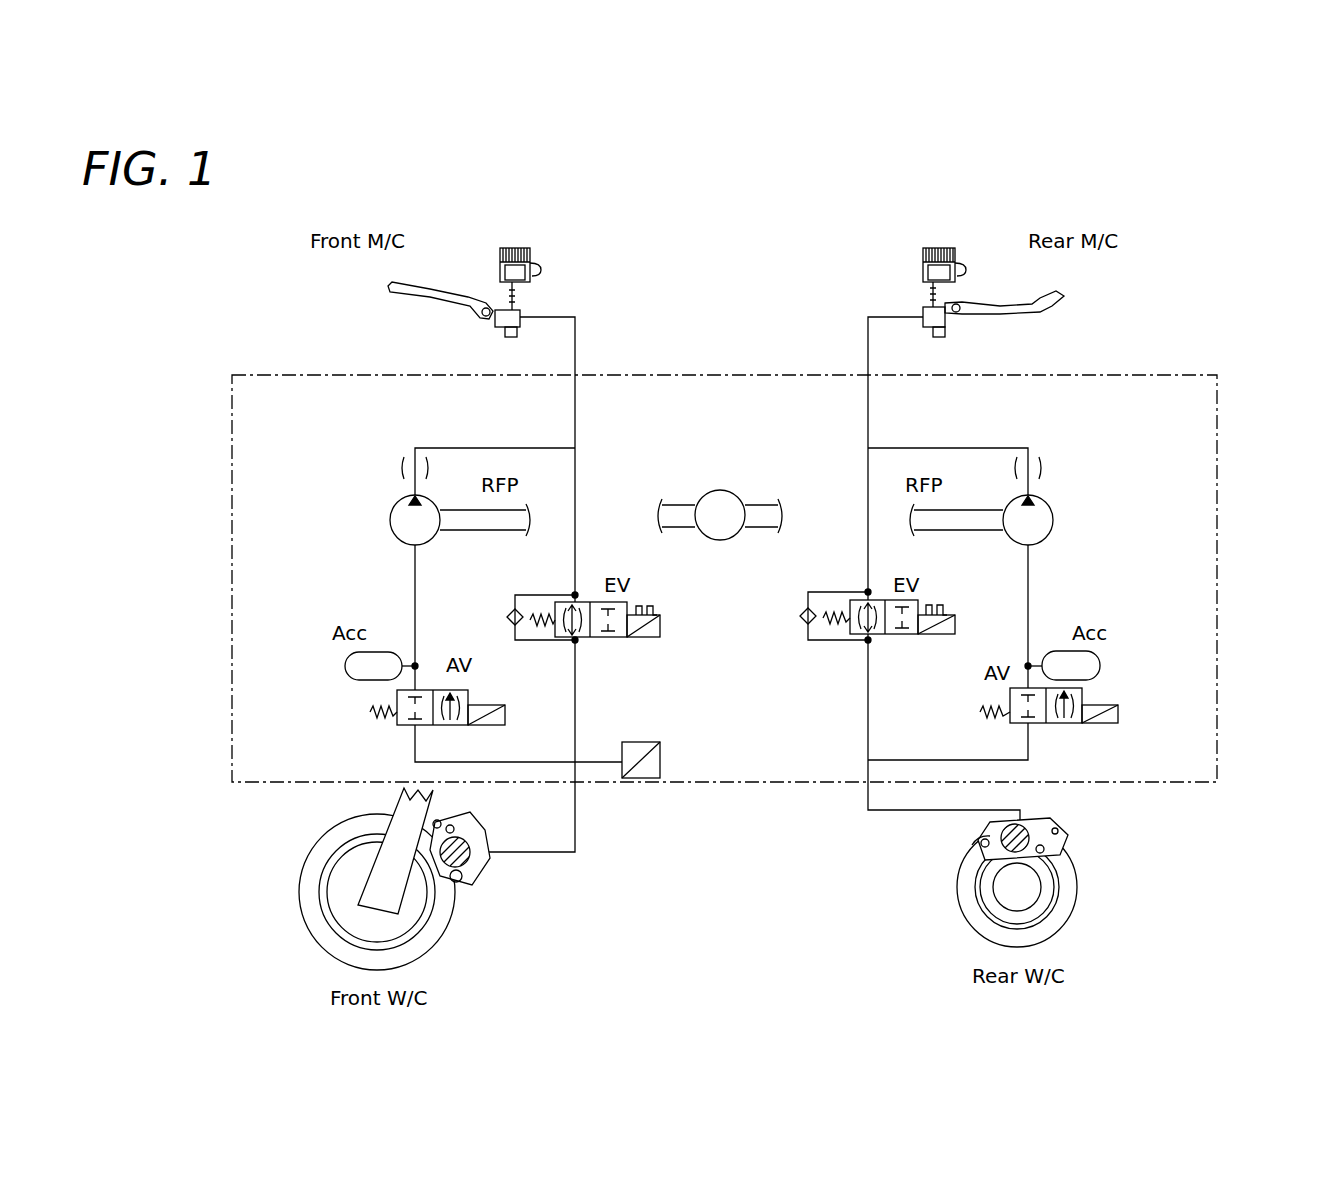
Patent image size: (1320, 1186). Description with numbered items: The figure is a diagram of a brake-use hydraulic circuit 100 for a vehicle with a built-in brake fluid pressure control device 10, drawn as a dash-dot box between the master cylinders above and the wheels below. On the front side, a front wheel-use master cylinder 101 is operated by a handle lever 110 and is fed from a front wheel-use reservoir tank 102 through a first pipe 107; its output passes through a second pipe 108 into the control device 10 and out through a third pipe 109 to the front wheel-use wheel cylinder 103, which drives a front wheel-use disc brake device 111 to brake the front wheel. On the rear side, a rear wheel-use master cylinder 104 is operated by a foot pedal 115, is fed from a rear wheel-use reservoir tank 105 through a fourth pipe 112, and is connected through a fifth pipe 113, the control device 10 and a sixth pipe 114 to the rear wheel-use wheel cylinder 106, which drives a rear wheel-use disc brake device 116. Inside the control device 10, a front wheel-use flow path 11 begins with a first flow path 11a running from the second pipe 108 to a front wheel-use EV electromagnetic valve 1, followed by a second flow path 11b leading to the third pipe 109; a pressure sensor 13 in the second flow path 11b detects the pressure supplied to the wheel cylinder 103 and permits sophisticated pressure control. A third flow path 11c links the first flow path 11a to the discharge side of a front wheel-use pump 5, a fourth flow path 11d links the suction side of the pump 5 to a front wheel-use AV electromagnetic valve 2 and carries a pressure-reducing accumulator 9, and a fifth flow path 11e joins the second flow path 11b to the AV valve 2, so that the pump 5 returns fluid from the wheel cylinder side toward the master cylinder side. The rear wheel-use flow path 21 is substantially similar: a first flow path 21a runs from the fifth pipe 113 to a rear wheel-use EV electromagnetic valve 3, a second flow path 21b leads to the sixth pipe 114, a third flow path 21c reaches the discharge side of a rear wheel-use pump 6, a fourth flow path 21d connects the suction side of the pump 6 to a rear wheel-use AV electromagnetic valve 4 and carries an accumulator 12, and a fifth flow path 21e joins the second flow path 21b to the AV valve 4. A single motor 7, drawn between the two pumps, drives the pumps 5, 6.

The front wheel-use EV electromagnetic valve 1 is at (616, 640).
The front wheel-use AV electromagnetic valve 2 is at (397, 694).
The rear wheel-use EV electromagnetic valve 3 is at (904, 635).
The rear wheel-use AV electromagnetic valve 4 is at (1058, 725).
The front wheel-use pump 5 is at (390, 519).
The rear wheel-use pump 6 is at (1052, 515).
The motor 7 is at (712, 490).
The accumulator 9 is at (345, 666).
The brake fluid pressure control device 10 is at (1217, 443).
The front wheel-use flow path 11 is at (590, 476).
The first flow path 11a is at (575, 410).
The second flow path 11b is at (577, 712).
The third flow path 11c is at (437, 448).
The fourth flow path 11d is at (415, 593).
The fifth flow path 11e is at (497, 762).
The accumulator 12 is at (1102, 666).
The pressure sensor 13 is at (660, 752).
The rear wheel-use flow path 21 is at (830, 458).
The first flow path 21a is at (868, 406).
The second flow path 21b is at (868, 710).
The third flow path 21c is at (950, 448).
The fourth flow path 21d is at (1030, 602).
The fifth flow path 21e is at (962, 760).
The brake-use hydraulic circuit 100 is at (1268, 273).
The front wheel-use master cylinder 101 is at (522, 314).
The front wheel-use reservoir tank 102 is at (530, 252).
The front wheel-use wheel cylinder 103 is at (483, 870).
The rear wheel-use master cylinder 104 is at (920, 315).
The rear wheel-use reservoir tank 105 is at (945, 248).
The rear wheel-use wheel cylinder 106 is at (1032, 822).
The first pipe 107 is at (514, 292).
The second pipe 108 is at (575, 352).
The third pipe 109 is at (577, 828).
The handle lever 110 is at (428, 296).
The front wheel-use disc brake device 111 is at (448, 820).
The fourth pipe 112 is at (930, 292).
The fifth pipe 113 is at (868, 347).
The sixth pipe 114 is at (880, 812).
The foot pedal 115 is at (1064, 300).
The rear wheel-use disc brake device 116 is at (980, 858).